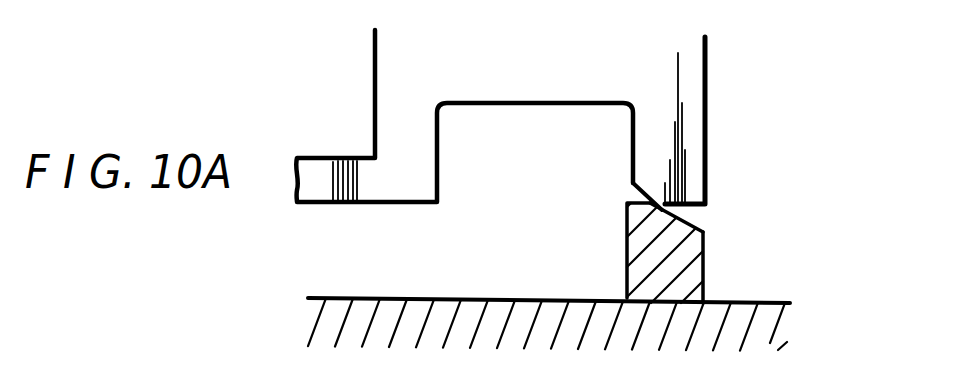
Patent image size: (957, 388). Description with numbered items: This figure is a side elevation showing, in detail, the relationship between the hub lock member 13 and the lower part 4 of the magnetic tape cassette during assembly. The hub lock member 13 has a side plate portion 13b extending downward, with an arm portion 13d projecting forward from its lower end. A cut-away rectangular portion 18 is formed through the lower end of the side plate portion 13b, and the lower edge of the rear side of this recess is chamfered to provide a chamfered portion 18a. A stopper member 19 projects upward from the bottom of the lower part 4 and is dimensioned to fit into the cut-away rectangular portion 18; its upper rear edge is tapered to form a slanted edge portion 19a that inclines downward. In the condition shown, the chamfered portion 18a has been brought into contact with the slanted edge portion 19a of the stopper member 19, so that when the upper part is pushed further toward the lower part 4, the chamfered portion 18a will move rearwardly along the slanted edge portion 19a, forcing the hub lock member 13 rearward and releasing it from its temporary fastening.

The lower part 4 is at (370, 298).
The hub lock member 13 is at (708, 126).
The side plate portion 13b is at (662, 80).
The arm portion 13d is at (332, 157).
The cut-away rectangular portion 18 is at (437, 183).
The chamfered portion 18a is at (633, 186).
The stopper member 19 is at (627, 228).
The slanted edge portion 19a is at (683, 216).